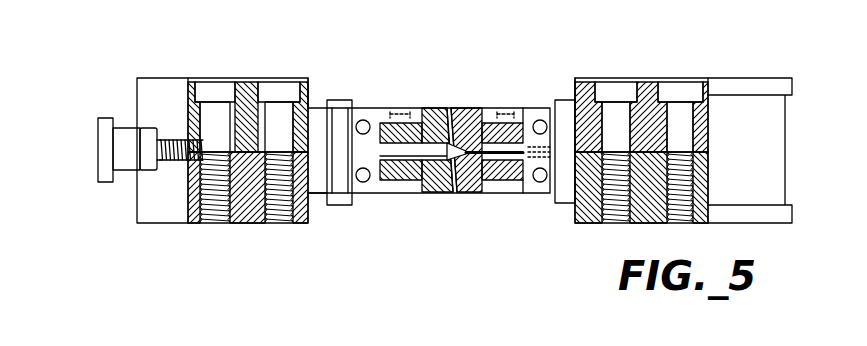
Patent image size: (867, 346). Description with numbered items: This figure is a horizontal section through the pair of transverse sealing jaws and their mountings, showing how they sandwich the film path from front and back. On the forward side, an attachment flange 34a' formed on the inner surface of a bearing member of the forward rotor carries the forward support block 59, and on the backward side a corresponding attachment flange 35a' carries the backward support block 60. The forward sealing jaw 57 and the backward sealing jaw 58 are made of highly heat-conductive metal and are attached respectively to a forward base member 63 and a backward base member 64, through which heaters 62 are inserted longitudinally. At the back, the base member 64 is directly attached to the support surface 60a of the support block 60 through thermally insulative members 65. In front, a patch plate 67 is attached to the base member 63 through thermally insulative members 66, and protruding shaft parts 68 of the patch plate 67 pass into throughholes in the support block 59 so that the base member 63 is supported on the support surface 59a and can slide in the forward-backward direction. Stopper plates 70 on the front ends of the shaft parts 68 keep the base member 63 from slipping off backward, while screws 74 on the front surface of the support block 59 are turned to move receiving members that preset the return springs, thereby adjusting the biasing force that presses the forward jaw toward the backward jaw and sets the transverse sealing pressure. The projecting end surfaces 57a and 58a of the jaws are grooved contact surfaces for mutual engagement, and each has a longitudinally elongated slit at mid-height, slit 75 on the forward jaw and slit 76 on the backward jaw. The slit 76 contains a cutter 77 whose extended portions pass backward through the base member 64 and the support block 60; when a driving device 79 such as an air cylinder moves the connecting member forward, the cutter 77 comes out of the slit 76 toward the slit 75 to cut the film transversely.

The stopper plate 70 is at (107, 122).
The protruding shaft part 68 is at (128, 166).
The screw 74 is at (173, 140).
The attachment flange 34a' is at (222, 164).
The support block 59 is at (217, 76).
The support surface 59a is at (310, 90).
The base member 63 is at (388, 194).
The patch plate 67 is at (320, 197).
The thermally insulative member 66 is at (331, 207).
The heater 62 is at (365, 119).
The slit 75 is at (440, 194).
The sealing jaw 57 is at (441, 108).
The sealing jaw 58 is at (467, 108).
The projecting end surface 57a is at (458, 108).
The projecting end surface 58a is at (454, 150).
The slit 76 is at (466, 196).
The cutter 77 is at (507, 183).
The base member 64 is at (521, 189).
The thermally insulative member 65 is at (566, 198).
The support surface 60a is at (571, 98).
The attachment flange 35a' is at (663, 163).
The support block 60 is at (683, 75).
The driving device 79 is at (778, 158).